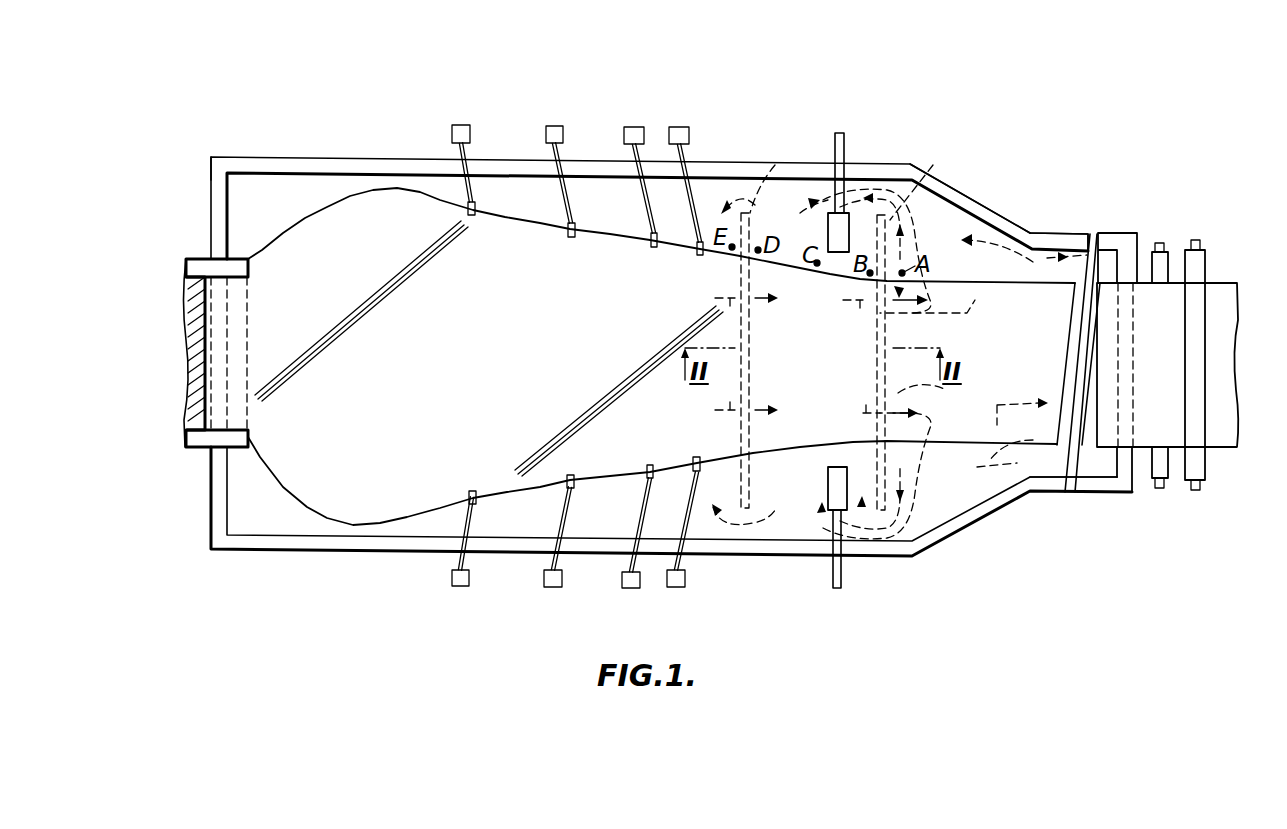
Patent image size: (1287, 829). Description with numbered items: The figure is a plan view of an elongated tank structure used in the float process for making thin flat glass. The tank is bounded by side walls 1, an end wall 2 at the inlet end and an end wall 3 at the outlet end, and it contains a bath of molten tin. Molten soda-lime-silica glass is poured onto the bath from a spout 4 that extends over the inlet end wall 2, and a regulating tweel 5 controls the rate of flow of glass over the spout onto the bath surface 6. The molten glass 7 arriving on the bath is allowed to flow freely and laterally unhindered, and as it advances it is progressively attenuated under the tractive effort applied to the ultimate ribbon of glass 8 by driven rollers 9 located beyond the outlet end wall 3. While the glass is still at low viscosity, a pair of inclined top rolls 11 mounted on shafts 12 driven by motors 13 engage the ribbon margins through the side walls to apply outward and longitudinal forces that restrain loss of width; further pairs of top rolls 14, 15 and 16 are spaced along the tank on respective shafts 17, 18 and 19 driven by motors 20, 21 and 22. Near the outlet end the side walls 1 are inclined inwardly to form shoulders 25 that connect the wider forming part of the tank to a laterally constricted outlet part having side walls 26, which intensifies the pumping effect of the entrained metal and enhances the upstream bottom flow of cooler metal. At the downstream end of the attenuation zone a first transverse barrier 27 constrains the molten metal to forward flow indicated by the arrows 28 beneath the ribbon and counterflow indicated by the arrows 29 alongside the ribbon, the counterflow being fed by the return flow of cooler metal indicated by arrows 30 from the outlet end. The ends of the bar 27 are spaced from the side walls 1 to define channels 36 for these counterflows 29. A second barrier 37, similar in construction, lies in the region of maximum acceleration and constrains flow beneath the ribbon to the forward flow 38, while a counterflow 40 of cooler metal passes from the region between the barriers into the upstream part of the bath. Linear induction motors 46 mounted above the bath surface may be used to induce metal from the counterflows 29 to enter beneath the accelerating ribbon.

The side walls 1 is at (310, 168).
The end wall 2 is at (214, 192).
The end wall 3 is at (1125, 262).
The spout 4 is at (199, 448).
The regulating tweel 5 is at (197, 366).
The bath surface 6 is at (533, 192).
The molten glass 7 is at (281, 352).
The ultimate ribbon of glass 8 is at (377, 352).
The driven rollers 9 is at (1192, 268).
The inclined top rolls 11 is at (475, 216).
The shafts 12 is at (459, 150).
The motors 13 is at (461, 125).
The top rolls 14 is at (567, 238).
The top rolls 15 is at (652, 247).
The top rolls 16 is at (700, 256).
The shaft 17 is at (561, 154).
The shaft 18 is at (636, 153).
The shaft 19 is at (688, 153).
The motor 20 is at (555, 126).
The motor 21 is at (635, 127).
The motor 22 is at (679, 127).
The shoulders 25 is at (963, 200).
The side walls 26 is at (1065, 240).
The first transverse barrier 27 is at (923, 179).
The forward flow arrows 28 is at (858, 303).
The counterflow arrows 29 is at (908, 242).
The return flow arrows 30 is at (1047, 340).
The channels 36 is at (884, 214).
The second barrier 37 is at (750, 228).
The forward flow 38 is at (730, 302).
The counterflow 40 is at (762, 524).
The linear induction motors 46 is at (828, 232).